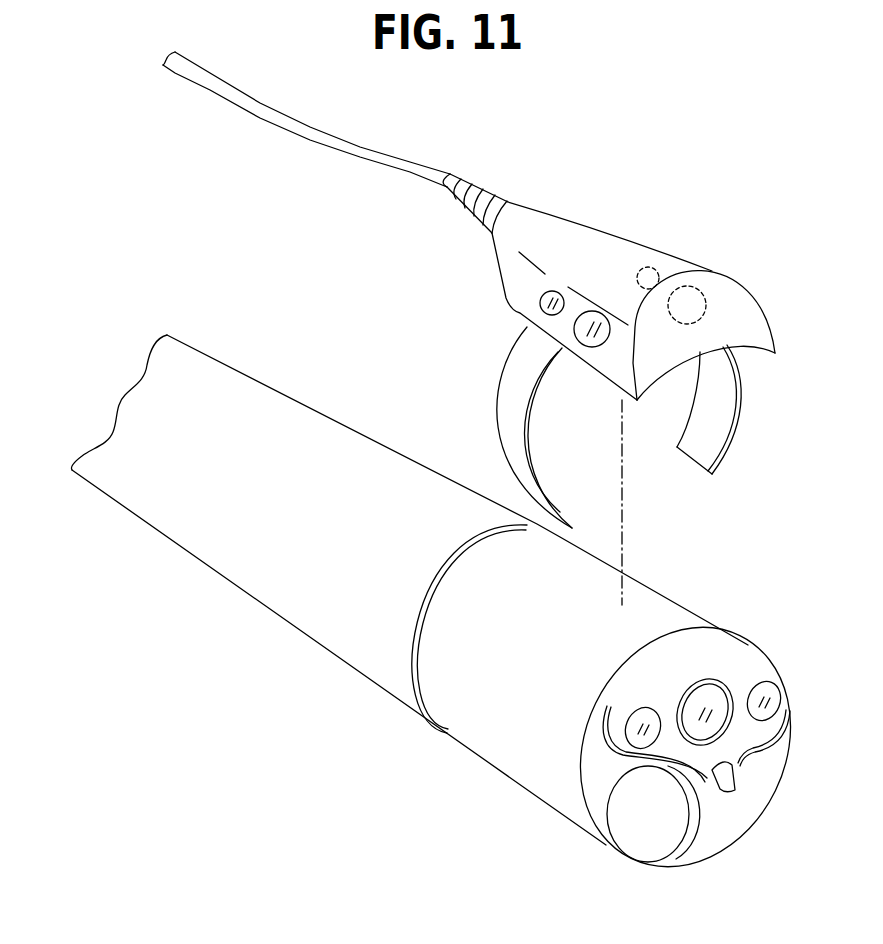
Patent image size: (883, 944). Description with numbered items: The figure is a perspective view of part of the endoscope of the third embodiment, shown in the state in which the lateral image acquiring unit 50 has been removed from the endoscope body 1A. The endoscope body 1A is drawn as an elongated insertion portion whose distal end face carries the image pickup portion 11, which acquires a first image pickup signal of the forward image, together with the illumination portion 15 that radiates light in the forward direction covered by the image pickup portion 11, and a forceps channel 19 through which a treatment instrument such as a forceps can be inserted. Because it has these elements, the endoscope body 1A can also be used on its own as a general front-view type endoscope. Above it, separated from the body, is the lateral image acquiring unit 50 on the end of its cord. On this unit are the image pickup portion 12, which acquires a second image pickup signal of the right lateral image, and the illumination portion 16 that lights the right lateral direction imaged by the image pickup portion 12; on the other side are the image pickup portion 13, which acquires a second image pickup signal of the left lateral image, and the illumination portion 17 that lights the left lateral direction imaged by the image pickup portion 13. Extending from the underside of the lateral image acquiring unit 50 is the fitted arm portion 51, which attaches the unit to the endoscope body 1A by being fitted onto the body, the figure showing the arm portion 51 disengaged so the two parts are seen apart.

The endoscope body 1A is at (328, 612).
The image pickup portion 11 is at (705, 700).
The image pickup portion 12 is at (592, 311).
The image pickup portion 13 is at (698, 288).
The illumination portion 15 is at (640, 708).
The illumination portion 16 is at (553, 291).
The illumination portion 17 is at (655, 266).
The forceps channel 19 is at (652, 822).
The lateral image acquiring unit 50 is at (535, 236).
The fitted arm portion 51 is at (707, 423).